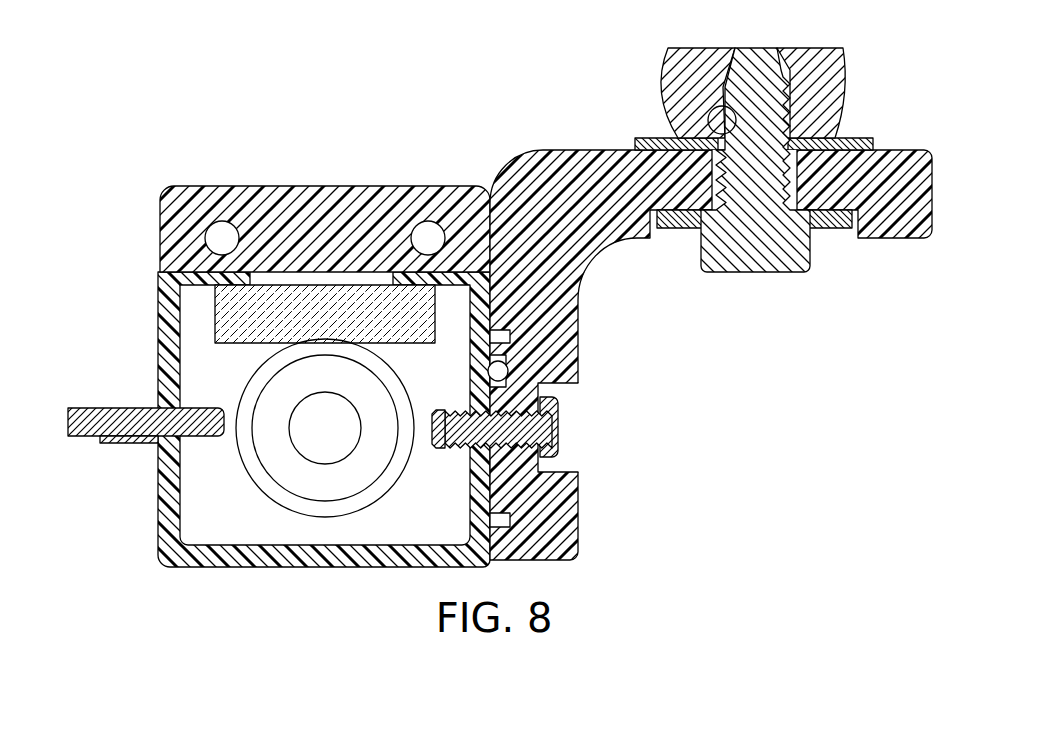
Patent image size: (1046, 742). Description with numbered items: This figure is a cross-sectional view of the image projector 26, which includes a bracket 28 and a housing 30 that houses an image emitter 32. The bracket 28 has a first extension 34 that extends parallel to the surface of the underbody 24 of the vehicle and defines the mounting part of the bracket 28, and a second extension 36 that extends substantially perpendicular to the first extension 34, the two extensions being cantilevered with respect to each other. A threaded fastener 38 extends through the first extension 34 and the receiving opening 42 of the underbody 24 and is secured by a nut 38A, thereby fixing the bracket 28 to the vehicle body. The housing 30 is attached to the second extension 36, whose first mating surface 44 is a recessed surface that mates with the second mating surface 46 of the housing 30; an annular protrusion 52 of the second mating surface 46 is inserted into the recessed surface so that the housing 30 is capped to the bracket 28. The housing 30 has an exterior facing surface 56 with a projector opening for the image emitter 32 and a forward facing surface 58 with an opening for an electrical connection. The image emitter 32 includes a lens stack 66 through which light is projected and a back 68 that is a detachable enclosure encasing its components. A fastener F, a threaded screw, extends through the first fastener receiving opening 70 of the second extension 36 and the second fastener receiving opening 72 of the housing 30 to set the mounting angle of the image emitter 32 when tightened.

The underbody 24 is at (858, 143).
The image projector 26 is at (266, 77).
The bracket 28 is at (693, 415).
The housing 30 is at (124, 206).
The image emitter 32 is at (248, 468).
The first extension 34 is at (890, 240).
The second extension 36 is at (711, 332).
The fastener 38 is at (748, 243).
The nut 38A is at (688, 77).
The receiving opening 42 is at (716, 104).
The first mating surface 44 is at (492, 497).
The second mating surface 46 is at (490, 381).
The annular protrusion 52 is at (505, 337).
The exterior facing surface 56 is at (278, 567).
The forward facing surface 58 is at (160, 510).
The lens stack 66 is at (347, 457).
The back 68 is at (291, 217).
The first fastener receiving opening 70 is at (565, 470).
The second fastener receiving opening 72 is at (462, 440).
The fastener F is at (546, 428).